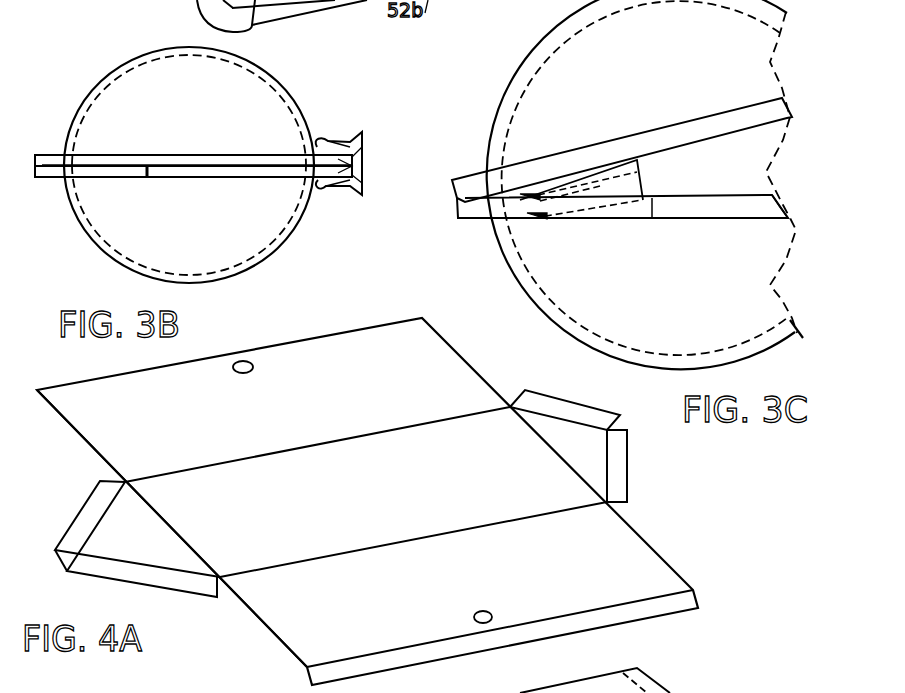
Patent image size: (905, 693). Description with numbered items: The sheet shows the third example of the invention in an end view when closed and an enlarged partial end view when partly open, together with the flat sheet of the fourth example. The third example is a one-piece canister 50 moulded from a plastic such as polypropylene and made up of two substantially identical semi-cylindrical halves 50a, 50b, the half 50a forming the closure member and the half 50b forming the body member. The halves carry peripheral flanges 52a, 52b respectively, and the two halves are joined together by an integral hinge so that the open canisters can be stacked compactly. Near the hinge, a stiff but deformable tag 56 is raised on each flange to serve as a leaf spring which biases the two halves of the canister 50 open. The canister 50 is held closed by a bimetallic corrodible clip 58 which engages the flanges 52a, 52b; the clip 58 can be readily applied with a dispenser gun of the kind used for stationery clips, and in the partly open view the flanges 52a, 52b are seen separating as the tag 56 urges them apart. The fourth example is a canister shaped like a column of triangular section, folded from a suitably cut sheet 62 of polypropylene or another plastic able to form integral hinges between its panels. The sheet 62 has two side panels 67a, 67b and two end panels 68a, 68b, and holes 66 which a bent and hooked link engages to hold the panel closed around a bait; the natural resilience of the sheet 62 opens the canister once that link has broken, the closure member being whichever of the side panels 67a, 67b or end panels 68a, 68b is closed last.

In FIG. 3B, the one-piece canister 50 is at (104, 65).
In FIG. 3C, the one-piece canister 50 is at (553, 32).
In FIG. 3B, the canister half 50a is at (240, 97).
In FIG. 3B, the canister half 50b is at (248, 233).
In FIG. 3B, the peripheral flange 52a is at (352, 156).
In FIG. 3C, the peripheral flange 52a is at (659, 138).
In FIG. 3B, the peripheral flange 52b is at (353, 172).
In FIG. 3C, the peripheral flange 52b is at (740, 210).
In FIG. 3B, the tag 56 is at (97, 172).
In FIG. 3C, the tag 56 is at (633, 176).
In FIG. 3B, the bimetallic corrodible clip 58 is at (327, 136).
In FIG. 4A, the sheet 62 is at (650, 533).
In FIG. 4A, the holes 66 is at (240, 373).
In FIG. 4A, the side panel 67a is at (160, 420).
In FIG. 4A, the side panel 67b is at (364, 607).
In FIG. 4A, the end panel 68a is at (142, 548).
In FIG. 4A, the end panel 68b is at (583, 449).